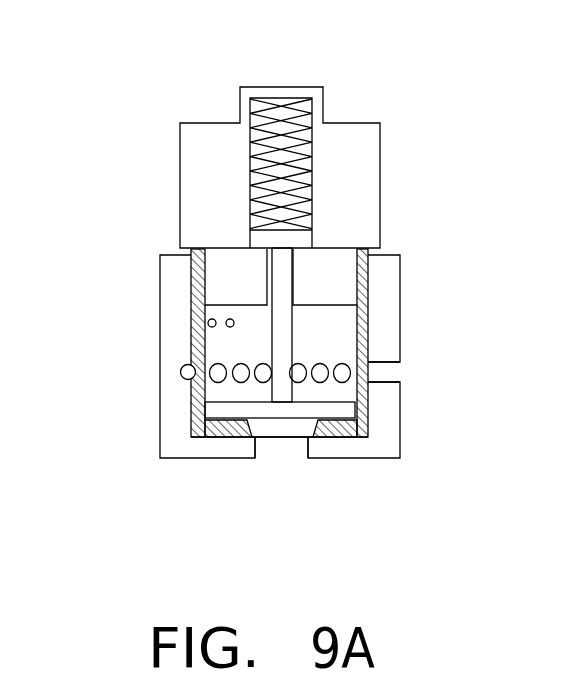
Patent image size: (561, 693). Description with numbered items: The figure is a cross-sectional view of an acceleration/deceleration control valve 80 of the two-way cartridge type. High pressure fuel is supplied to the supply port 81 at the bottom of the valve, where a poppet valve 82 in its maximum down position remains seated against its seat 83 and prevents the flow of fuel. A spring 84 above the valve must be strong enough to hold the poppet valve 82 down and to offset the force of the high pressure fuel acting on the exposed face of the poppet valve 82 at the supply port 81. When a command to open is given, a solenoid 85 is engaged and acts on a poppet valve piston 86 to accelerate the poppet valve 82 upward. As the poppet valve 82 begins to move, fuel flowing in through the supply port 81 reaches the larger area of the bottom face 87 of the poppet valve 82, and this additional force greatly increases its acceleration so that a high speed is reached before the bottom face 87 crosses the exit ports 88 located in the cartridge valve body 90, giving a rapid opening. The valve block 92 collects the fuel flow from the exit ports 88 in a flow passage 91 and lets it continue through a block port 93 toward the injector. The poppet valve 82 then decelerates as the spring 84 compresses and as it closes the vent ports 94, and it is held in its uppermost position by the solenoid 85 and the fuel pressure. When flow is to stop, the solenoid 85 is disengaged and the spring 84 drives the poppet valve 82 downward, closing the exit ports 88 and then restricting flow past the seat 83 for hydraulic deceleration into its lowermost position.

The acceleration/deceleration control valve 80 is at (157, 267).
The supply port 81 is at (282, 453).
The poppet valve 82 is at (295, 440).
The seat 83 is at (262, 440).
The spring 84 is at (278, 100).
The solenoid 85 is at (362, 170).
The poppet valve piston 86 is at (305, 240).
The bottom face 87 is at (207, 438).
The exit ports 88 is at (342, 362).
The cartridge valve body 90 is at (366, 289).
The flow passage 91 is at (181, 373).
The valve block 92 is at (387, 407).
The block port 93 is at (397, 370).
The vent ports 94 is at (230, 319).